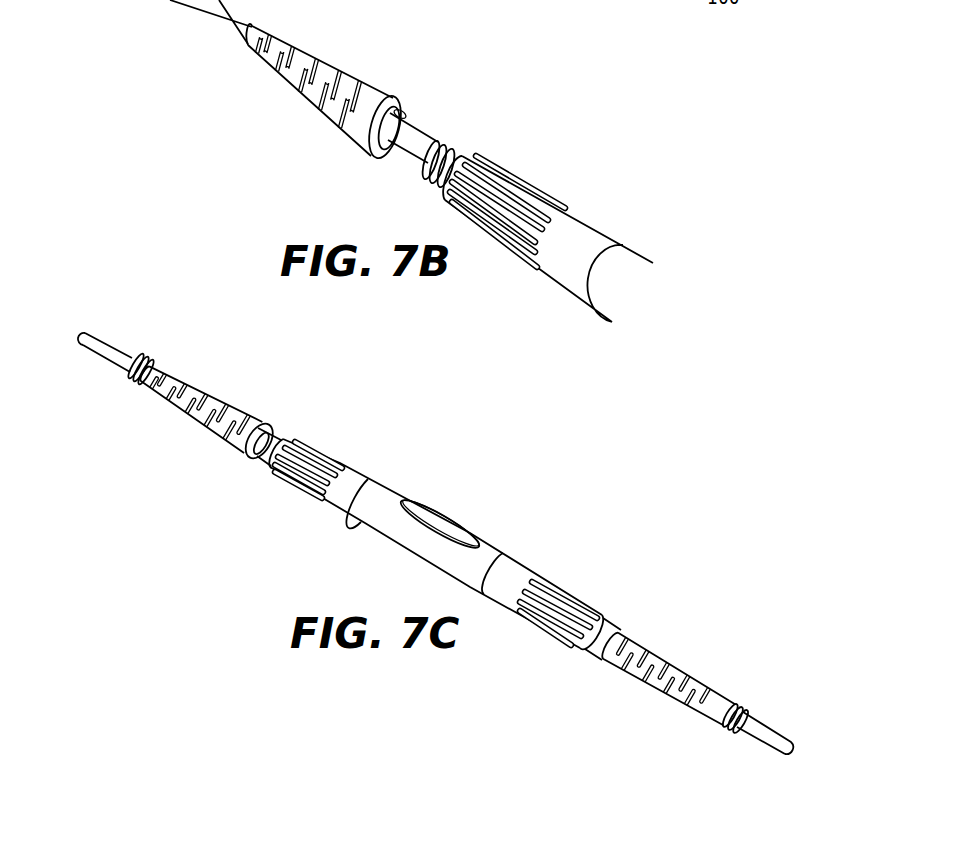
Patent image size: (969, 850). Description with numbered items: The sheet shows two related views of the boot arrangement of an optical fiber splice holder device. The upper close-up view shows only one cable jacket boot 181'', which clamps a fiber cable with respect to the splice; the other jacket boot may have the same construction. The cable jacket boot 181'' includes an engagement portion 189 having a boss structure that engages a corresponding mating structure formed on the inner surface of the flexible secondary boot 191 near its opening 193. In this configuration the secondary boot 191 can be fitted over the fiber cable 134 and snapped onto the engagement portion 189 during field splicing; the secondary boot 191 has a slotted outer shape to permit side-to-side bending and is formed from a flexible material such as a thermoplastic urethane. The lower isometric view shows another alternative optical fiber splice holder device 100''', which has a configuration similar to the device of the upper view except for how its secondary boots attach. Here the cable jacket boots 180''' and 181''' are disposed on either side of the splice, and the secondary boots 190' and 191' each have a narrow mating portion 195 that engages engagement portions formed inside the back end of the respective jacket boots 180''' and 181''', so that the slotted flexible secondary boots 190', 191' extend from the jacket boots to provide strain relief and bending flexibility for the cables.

In FIG. 7B, the secondary boot 191 is at (327, 81).
In FIG. 7B, the opening 193 is at (408, 115).
In FIG. 7B, the optical fiber cable 134 is at (405, 153).
In FIG. 7B, the engagement portion 189 is at (458, 146).
In FIG. 7B, the cable jacket boot 181'' is at (606, 165).
In FIG. 7C, the secondary boot 191' is at (205, 410).
In FIG. 7C, the mating portion 195 is at (260, 458).
In FIG. 7C, the cable jacket boot 181''' is at (435, 539).
In FIG. 7C, the optical fiber splice holder device 100''' is at (502, 465).
In FIG. 7C, the cable jacket boot 180''' is at (571, 599).
In FIG. 7C, the secondary boot 190' is at (696, 689).